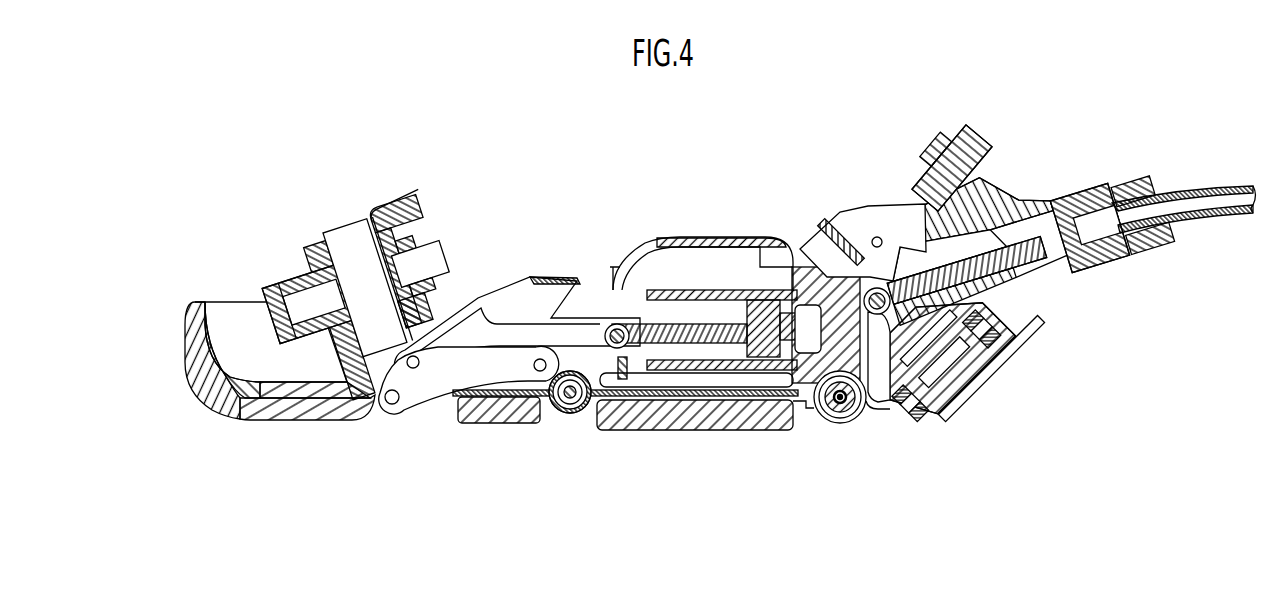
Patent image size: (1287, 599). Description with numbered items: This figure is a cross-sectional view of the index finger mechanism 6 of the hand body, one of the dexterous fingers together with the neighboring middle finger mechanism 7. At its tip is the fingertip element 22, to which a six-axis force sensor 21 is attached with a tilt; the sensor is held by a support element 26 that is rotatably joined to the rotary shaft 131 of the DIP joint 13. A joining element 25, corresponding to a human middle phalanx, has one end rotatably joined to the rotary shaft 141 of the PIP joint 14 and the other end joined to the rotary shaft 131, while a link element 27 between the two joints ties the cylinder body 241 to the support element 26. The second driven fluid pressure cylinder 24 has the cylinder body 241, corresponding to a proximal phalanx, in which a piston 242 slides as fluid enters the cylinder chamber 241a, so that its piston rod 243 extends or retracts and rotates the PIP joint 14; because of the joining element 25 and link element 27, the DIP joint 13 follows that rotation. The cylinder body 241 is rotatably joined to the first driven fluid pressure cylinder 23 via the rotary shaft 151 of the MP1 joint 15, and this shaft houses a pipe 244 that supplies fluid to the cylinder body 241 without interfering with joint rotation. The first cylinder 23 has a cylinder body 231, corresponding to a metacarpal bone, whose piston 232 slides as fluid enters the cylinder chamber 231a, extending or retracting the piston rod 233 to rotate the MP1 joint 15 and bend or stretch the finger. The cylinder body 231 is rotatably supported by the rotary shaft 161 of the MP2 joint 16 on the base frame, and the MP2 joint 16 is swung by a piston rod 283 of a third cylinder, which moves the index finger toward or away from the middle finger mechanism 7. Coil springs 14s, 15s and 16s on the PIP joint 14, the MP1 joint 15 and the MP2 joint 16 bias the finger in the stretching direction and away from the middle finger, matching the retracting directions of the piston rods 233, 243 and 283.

The index finger mechanism 6 is at (324, 316).
The middle finger mechanism 7 is at (262, 296).
The DIP joint 13 is at (395, 424).
The rotary shaft 131 is at (413, 368).
The PIP joint 14 is at (582, 442).
The coil spring 14s is at (557, 402).
The rotary shaft 141 is at (580, 410).
The MP1 joint 15 is at (844, 433).
The coil spring 15s is at (837, 424).
The rotary shaft 151 is at (823, 421).
The MP2 joint 16 is at (988, 350).
The coil spring 16s is at (995, 327).
The rotary shaft 161 is at (962, 349).
The six-axis force sensor 21 is at (362, 225).
The fingertip element 22 is at (193, 387).
The first driven fluid pressure cylinder 23 is at (1028, 246).
The cylinder body 231 is at (1083, 273).
The cylinder chamber 231a is at (1082, 247).
The piston 232 is at (1070, 223).
The piston rod 233 is at (900, 262).
The second driven fluid pressure cylinder 24 is at (752, 286).
The cylinder body 241 is at (733, 403).
The cylinder chamber 241a is at (680, 403).
The piston 242 is at (818, 305).
The piston rod 243 is at (680, 322).
The pipe 244 is at (855, 412).
The joining element 25 is at (520, 332).
The support element 26 is at (362, 400).
The link element 27 is at (482, 400).
The piston rod 283 is at (987, 172).